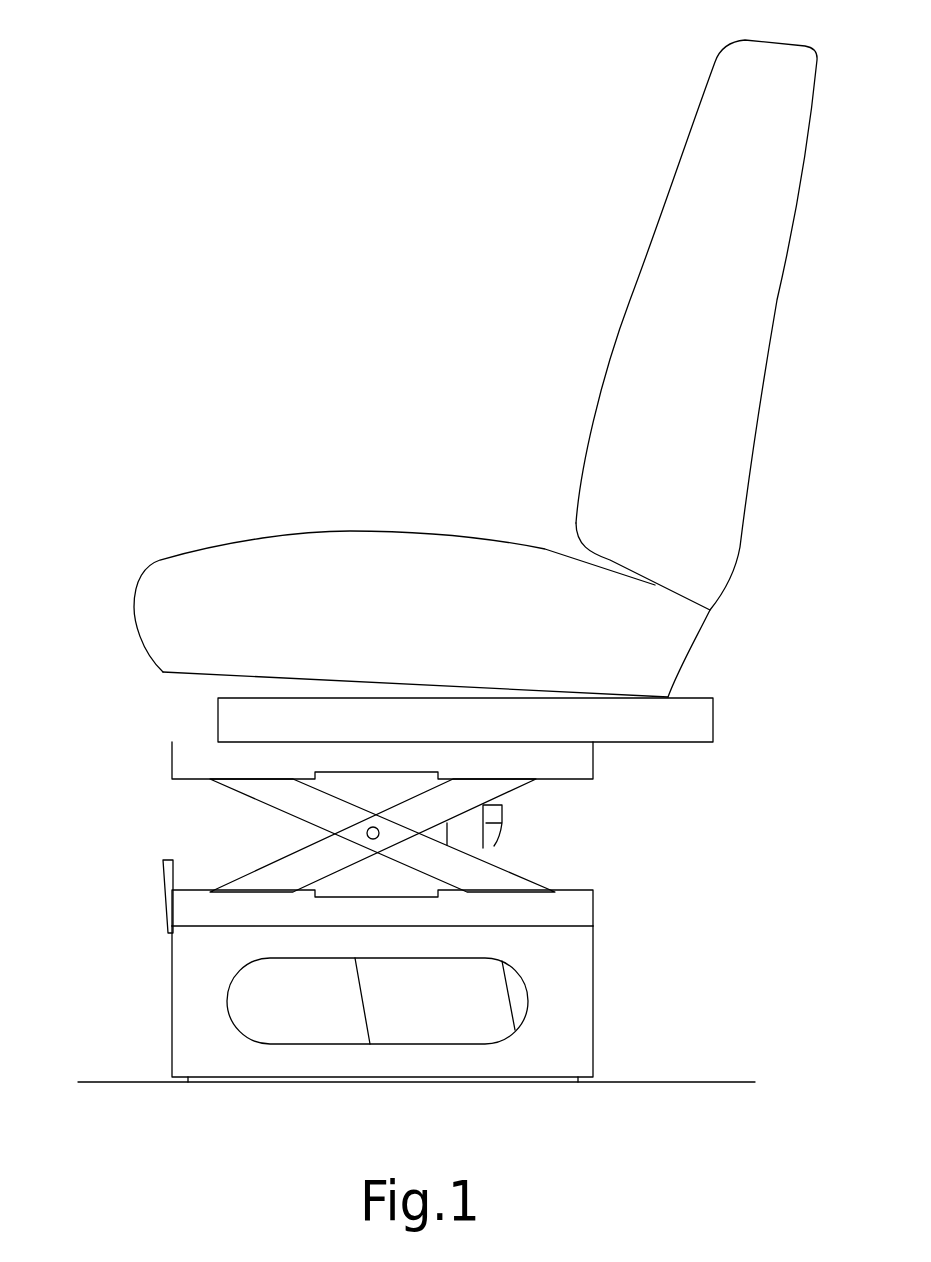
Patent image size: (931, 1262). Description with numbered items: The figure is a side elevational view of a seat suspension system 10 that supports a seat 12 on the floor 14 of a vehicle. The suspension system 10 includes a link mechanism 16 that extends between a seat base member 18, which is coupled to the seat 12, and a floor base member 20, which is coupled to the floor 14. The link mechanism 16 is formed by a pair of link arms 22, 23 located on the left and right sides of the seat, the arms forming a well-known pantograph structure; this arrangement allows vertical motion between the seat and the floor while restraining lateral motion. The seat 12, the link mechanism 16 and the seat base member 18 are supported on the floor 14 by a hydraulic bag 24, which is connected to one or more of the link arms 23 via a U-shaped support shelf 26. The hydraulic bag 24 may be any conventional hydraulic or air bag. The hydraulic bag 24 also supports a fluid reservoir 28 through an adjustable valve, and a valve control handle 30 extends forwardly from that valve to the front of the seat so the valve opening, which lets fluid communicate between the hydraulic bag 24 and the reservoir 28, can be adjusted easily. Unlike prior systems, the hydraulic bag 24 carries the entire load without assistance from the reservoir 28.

The seat suspension system 10 is at (730, 820).
The seat 12 is at (727, 483).
The floor 14 is at (652, 1093).
The link mechanism 16 is at (528, 788).
The seat base member 18 is at (700, 703).
The floor base member 20 is at (578, 957).
The link arm 22 is at (255, 785).
The link arm 23 is at (280, 873).
The hydraulic bag 24 is at (413, 1008).
The U-shaped support shelf 26 is at (528, 893).
The fluid reservoir 28 is at (485, 850).
The valve control handle 30 is at (160, 882).